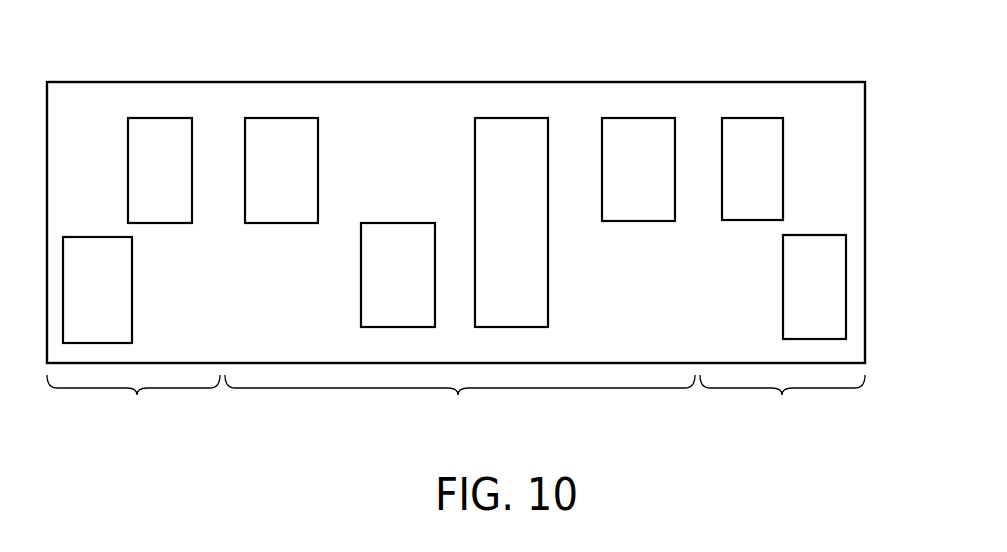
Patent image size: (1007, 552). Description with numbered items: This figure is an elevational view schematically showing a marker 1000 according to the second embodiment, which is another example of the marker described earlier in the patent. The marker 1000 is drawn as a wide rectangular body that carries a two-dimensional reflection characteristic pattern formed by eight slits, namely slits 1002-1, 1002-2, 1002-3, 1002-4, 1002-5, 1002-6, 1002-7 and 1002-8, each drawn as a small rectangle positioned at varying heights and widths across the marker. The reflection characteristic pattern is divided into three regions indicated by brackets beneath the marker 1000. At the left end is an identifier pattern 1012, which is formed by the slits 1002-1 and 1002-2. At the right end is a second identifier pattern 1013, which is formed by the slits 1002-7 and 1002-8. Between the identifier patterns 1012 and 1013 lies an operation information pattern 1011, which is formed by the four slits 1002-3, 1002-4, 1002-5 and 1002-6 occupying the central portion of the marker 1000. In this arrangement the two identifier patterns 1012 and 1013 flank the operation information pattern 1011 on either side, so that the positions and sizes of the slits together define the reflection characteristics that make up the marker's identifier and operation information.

The marker 1000 is at (866, 106).
The slit 1002-1 is at (100, 255).
The slit 1002-2 is at (160, 136).
The slit 1002-3 is at (282, 134).
The slit 1002-4 is at (394, 252).
The slit 1002-5 is at (513, 134).
The slit 1002-6 is at (640, 134).
The slit 1002-7 is at (750, 134).
The slit 1002-8 is at (815, 252).
The operation information pattern 1011 is at (460, 403).
The identifier pattern 1012 is at (133, 403).
The identifier pattern 1013 is at (782, 403).